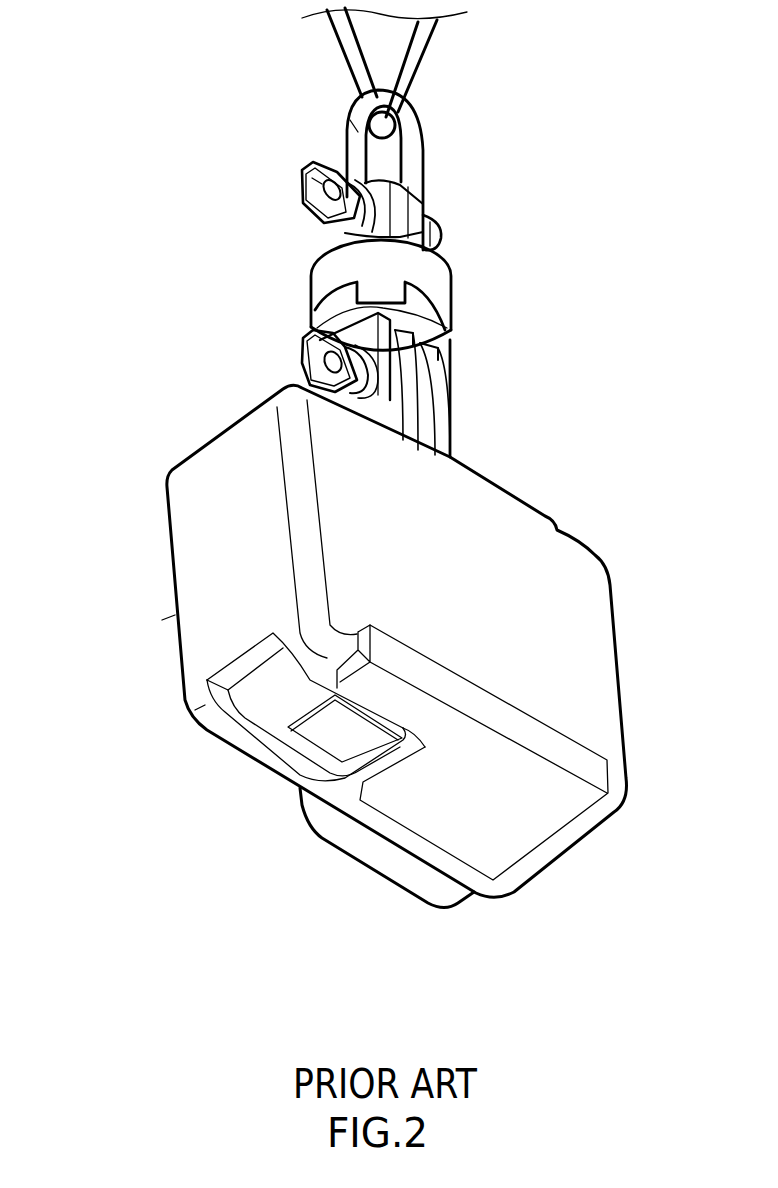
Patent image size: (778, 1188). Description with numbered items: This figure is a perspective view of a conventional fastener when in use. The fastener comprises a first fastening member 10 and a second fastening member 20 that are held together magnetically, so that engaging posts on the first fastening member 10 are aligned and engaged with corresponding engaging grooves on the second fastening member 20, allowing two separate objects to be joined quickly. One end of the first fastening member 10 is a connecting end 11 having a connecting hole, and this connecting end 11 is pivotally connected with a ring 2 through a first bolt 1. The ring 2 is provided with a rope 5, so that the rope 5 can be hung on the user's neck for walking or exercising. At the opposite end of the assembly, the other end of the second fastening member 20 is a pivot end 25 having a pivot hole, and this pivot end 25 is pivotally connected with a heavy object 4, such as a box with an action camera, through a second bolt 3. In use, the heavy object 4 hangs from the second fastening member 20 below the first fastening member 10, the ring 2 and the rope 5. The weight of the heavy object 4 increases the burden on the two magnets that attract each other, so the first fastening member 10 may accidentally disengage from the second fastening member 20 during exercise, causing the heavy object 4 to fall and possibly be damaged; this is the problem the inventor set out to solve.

The first bolt 1 is at (320, 187).
The ring 2 is at (358, 132).
The second bolt 3 is at (313, 362).
The heavy object 4 is at (215, 582).
The rope 5 is at (418, 50).
The first fastening member 10 is at (443, 278).
The connecting end 11 is at (418, 217).
The second fastening member 20 is at (337, 305).
The pivot end 25 is at (380, 380).